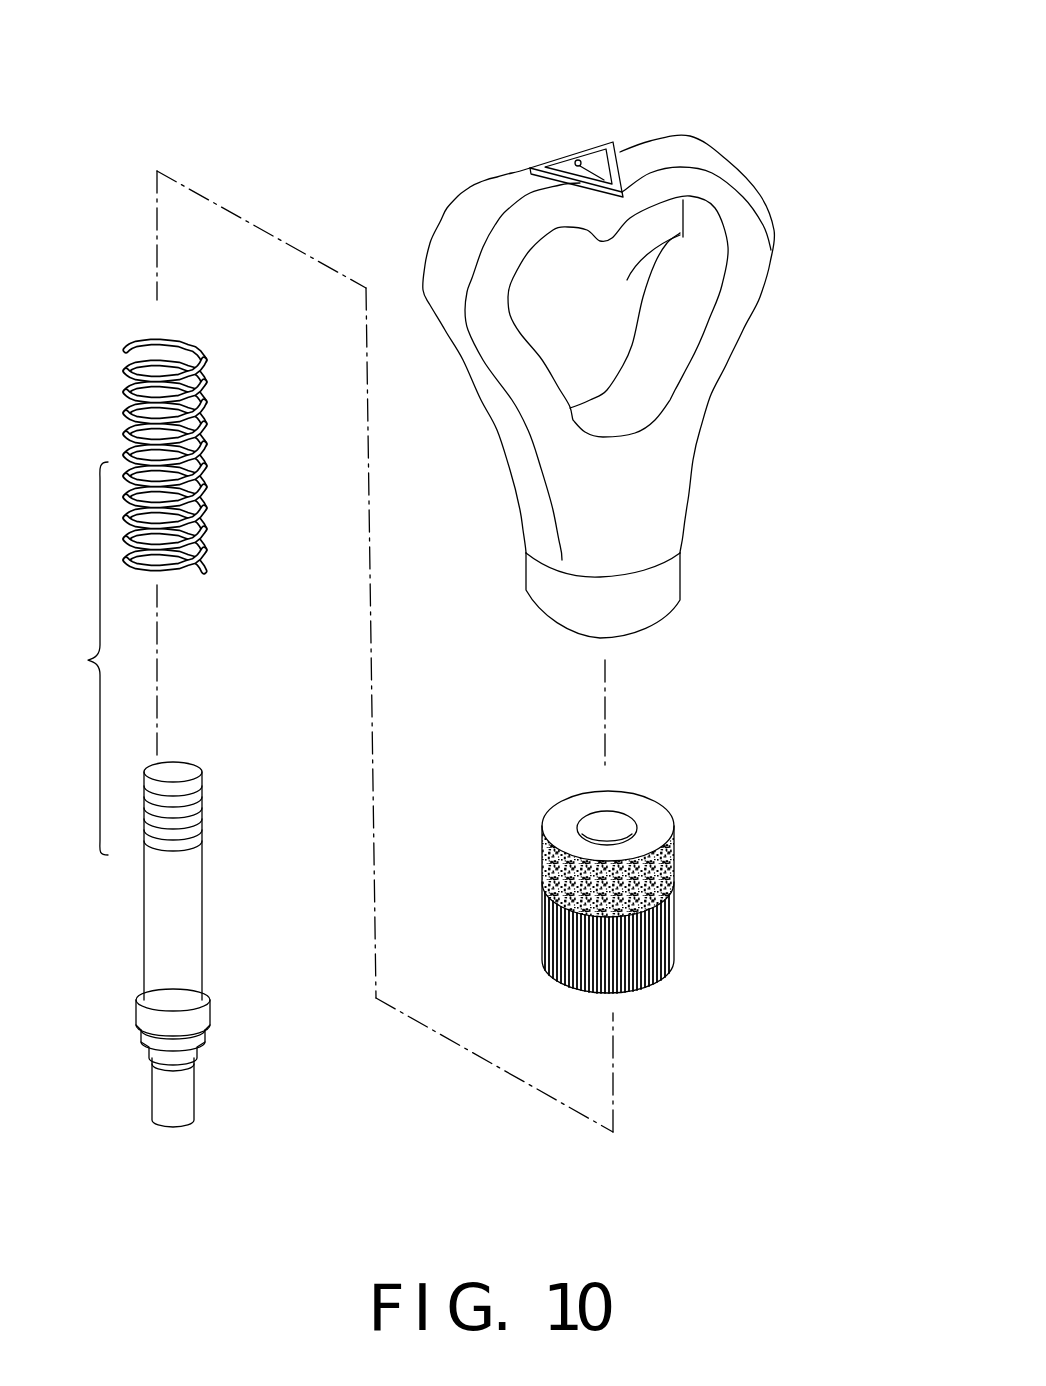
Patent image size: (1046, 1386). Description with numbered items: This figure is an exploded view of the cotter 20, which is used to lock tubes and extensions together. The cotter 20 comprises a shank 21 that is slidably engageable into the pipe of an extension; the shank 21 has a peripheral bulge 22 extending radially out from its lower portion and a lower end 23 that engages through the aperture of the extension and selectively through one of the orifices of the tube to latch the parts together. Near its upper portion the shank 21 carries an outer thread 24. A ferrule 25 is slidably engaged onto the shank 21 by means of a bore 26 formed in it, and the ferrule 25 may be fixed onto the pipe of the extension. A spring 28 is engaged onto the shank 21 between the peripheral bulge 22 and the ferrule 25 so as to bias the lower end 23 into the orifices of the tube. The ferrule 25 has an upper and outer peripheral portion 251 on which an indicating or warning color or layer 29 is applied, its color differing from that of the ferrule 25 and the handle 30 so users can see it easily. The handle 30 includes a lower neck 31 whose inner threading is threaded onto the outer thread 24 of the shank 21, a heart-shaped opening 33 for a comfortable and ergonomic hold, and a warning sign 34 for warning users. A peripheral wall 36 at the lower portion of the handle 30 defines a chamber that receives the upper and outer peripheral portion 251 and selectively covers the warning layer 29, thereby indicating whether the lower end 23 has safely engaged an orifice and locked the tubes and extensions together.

The cotter 20 is at (725, 78).
The shank 21 is at (192, 915).
The peripheral bulge 22 is at (208, 1007).
The lower end 23 is at (185, 1103).
The outer thread 24 is at (197, 808).
The ferrule 25 is at (657, 947).
The upper and outer peripheral portion 251 is at (537, 862).
The bore 26 is at (613, 835).
The spring 28 is at (193, 430).
The indicating or warning color or layer 29 is at (673, 870).
The handle 30 is at (685, 437).
The lower neck 31 is at (630, 545).
The heart-shaped opening 33 is at (680, 233).
The warning sign 34 is at (583, 148).
The peripheral wall 36 is at (667, 580).